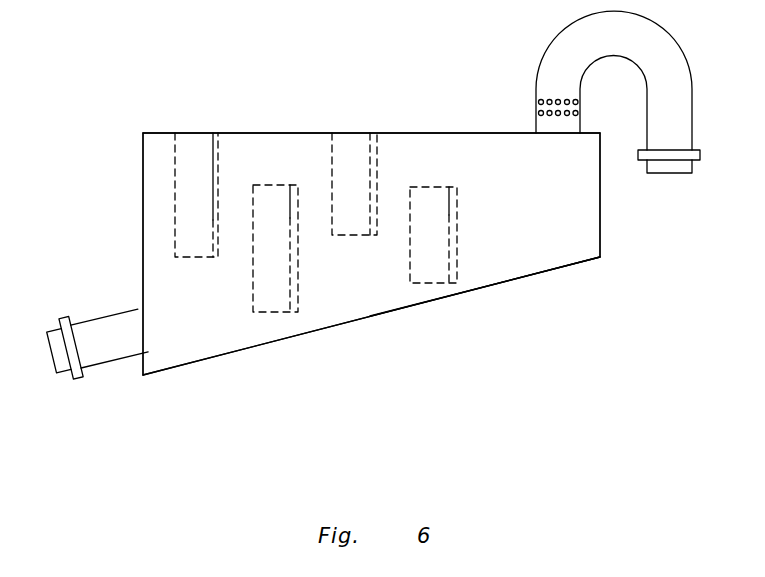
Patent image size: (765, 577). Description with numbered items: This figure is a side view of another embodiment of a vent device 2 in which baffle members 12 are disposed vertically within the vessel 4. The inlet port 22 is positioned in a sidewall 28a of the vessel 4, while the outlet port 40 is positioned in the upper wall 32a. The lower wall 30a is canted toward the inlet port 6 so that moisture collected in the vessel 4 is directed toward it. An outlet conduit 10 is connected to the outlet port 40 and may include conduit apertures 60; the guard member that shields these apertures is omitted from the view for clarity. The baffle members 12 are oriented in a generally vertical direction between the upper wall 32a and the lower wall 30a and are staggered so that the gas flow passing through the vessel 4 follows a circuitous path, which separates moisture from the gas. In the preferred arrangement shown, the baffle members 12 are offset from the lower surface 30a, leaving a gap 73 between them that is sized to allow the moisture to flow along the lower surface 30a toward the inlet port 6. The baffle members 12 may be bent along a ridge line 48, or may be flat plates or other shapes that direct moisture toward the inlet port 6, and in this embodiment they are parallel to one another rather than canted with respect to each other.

The vent device 2 is at (232, 106).
The vessel 4 is at (540, 273).
The inlet port 6 is at (107, 315).
The outlet conduit 10 is at (689, 65).
The baffle members 12 is at (296, 292).
The inlet port 22 is at (165, 335).
The sidewall 28a is at (143, 205).
The lower wall 30a is at (263, 344).
The upper wall 32a is at (357, 133).
The outlet port 40 is at (556, 160).
The ridge line 48 is at (300, 209).
The conduit apertures 60 is at (556, 99).
The gap 73 is at (261, 327).